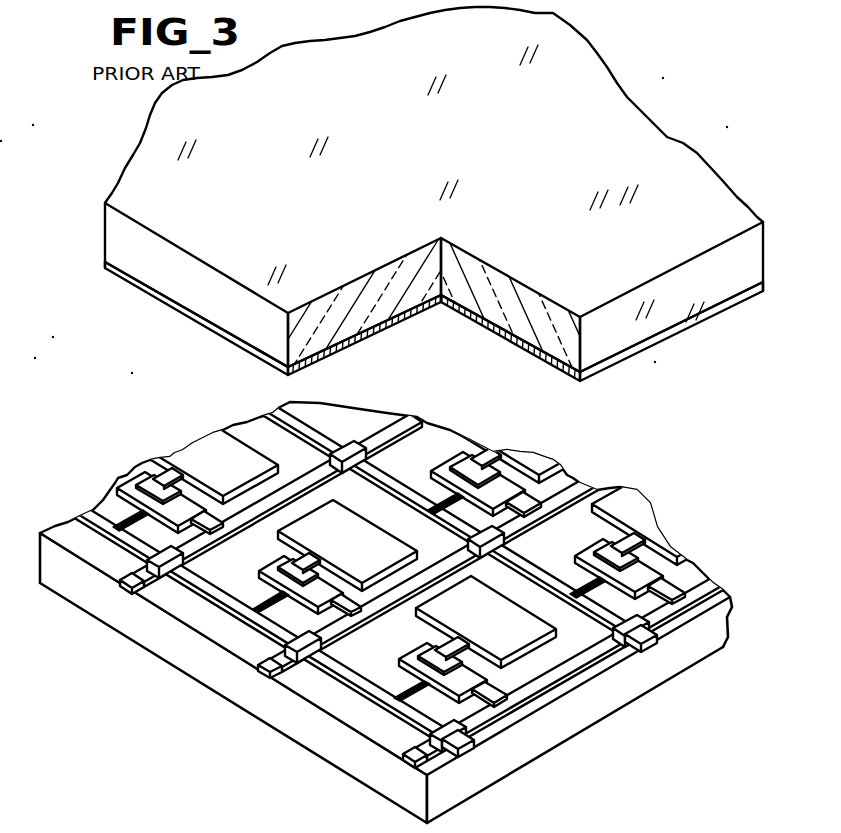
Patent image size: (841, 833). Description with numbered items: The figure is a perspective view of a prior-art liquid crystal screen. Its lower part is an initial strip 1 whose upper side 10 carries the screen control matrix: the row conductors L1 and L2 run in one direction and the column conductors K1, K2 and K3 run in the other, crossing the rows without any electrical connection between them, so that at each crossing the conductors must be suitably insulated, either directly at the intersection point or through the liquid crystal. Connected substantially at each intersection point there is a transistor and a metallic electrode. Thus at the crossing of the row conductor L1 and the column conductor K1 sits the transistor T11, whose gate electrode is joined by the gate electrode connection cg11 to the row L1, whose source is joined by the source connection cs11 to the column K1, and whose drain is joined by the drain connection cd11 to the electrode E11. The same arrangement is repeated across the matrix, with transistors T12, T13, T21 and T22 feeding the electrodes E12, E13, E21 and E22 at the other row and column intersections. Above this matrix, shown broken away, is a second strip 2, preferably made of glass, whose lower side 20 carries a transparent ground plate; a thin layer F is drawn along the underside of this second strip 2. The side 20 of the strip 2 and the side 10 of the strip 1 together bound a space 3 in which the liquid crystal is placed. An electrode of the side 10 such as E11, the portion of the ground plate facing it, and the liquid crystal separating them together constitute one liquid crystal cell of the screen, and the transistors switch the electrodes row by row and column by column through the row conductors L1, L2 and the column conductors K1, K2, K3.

The space 3 is at (112, 358).
The second strip 2 is at (140, 263).
The side of the second strip 20 is at (327, 357).
The film / thin layer F is at (590, 378).
The initial strip 1 is at (283, 713).
The side of the initial strip 10 is at (76, 541).
The column conductor K1 is at (416, 757).
The column conductor K2 is at (266, 670).
The column conductor K3 is at (128, 586).
The row conductor L1 is at (466, 745).
The row conductor L2 is at (648, 641).
The electrode E11 is at (505, 620).
The electrode E12 is at (412, 532).
The electrode E13 is at (207, 460).
The electrode E21 is at (657, 517).
The electrode E22 is at (550, 447).
The transistor T11 is at (420, 650).
The transistor T12 is at (277, 567).
The transistor T13 is at (140, 488).
The transistor T21 is at (593, 552).
The transistor T22 is at (457, 470).
The drain connection cd11 is at (450, 642).
The source connection cs11 is at (493, 685).
The gate electrode connection cg11 is at (407, 684).